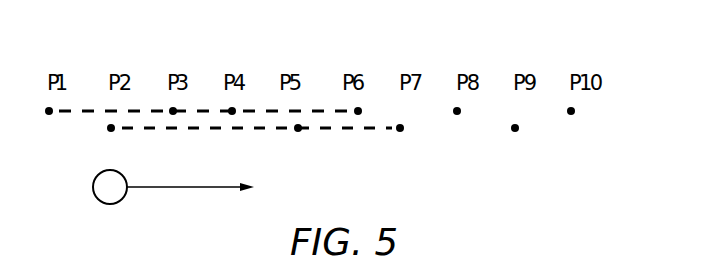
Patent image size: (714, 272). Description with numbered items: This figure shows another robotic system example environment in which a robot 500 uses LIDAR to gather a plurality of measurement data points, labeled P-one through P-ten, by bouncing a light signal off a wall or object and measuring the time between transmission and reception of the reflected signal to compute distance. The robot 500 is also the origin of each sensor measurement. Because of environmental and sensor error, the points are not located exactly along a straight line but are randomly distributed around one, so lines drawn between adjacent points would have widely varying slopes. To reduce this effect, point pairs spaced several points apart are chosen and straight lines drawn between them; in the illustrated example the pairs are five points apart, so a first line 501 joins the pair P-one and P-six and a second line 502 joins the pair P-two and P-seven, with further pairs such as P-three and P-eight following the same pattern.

The robot 500 is at (93, 187).
The first dashed line connecting points P1-P6 501 is at (248, 111).
The second dashed line connecting points P2-P7 502 is at (283, 128).